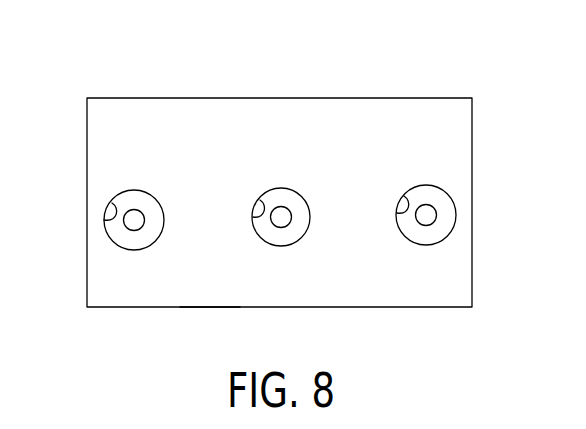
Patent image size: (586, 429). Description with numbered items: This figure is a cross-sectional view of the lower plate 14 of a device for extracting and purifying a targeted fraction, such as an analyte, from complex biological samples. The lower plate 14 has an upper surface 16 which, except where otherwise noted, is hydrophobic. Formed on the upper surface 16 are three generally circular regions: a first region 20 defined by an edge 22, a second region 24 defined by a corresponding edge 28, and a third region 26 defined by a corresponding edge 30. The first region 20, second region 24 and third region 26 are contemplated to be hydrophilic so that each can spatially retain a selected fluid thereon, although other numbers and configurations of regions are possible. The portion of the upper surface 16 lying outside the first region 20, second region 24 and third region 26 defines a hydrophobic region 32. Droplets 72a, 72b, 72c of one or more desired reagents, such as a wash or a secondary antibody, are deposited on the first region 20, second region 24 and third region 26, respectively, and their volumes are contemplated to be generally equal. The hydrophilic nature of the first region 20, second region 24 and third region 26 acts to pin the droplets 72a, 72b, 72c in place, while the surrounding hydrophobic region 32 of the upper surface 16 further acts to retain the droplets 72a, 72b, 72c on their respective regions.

The lower plate 14 is at (122, 98).
The upper surface 16 is at (265, 133).
The first region 20 is at (162, 198).
The edge 22 is at (105, 220).
The second region 24 is at (308, 195).
The third region 26 is at (452, 190).
The edge 28 is at (254, 217).
The edge 30 is at (398, 213).
The hydrophobic region 32 is at (207, 289).
The droplet 72a is at (138, 240).
The droplet 72b is at (283, 237).
The droplet 72c is at (428, 237).